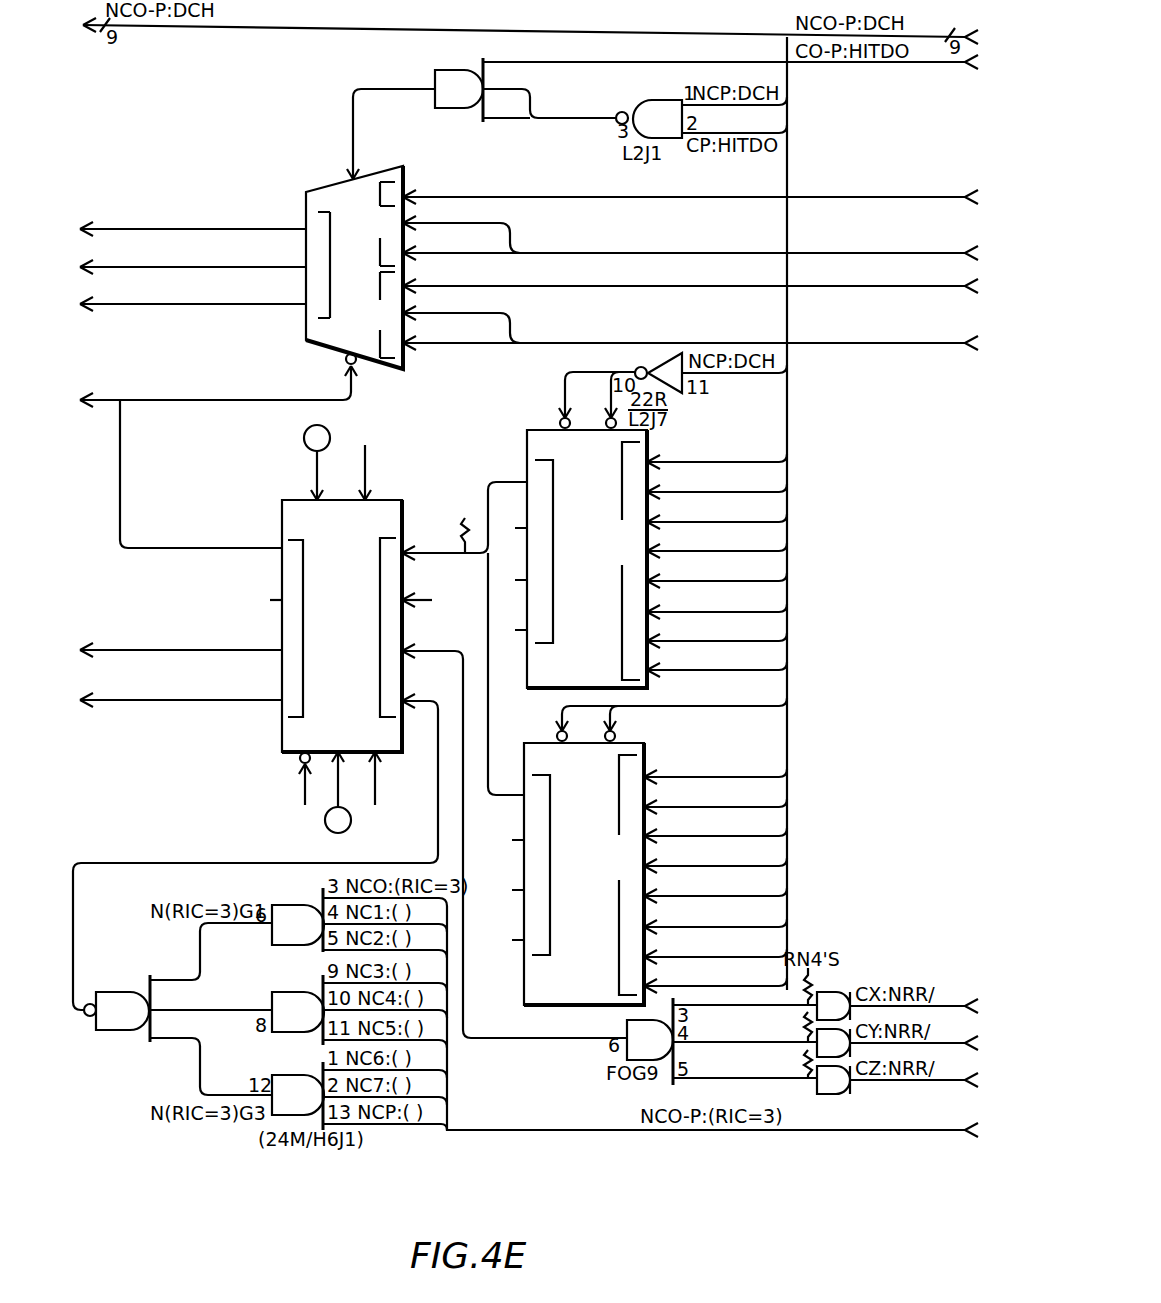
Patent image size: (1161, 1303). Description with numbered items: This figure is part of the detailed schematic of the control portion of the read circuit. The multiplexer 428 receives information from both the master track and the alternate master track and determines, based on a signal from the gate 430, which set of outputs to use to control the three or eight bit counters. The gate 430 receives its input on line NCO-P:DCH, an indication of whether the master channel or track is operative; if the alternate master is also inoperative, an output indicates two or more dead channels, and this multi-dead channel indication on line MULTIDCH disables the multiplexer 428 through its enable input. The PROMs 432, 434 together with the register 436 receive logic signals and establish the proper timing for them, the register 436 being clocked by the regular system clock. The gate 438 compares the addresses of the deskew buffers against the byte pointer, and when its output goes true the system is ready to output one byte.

The multiplexer 428 is at (306, 195).
The gate 430 is at (440, 74).
The PROM 432 is at (527, 435).
The PROM 434 is at (644, 748).
The register 436 is at (282, 506).
The gate 438 is at (120, 993).